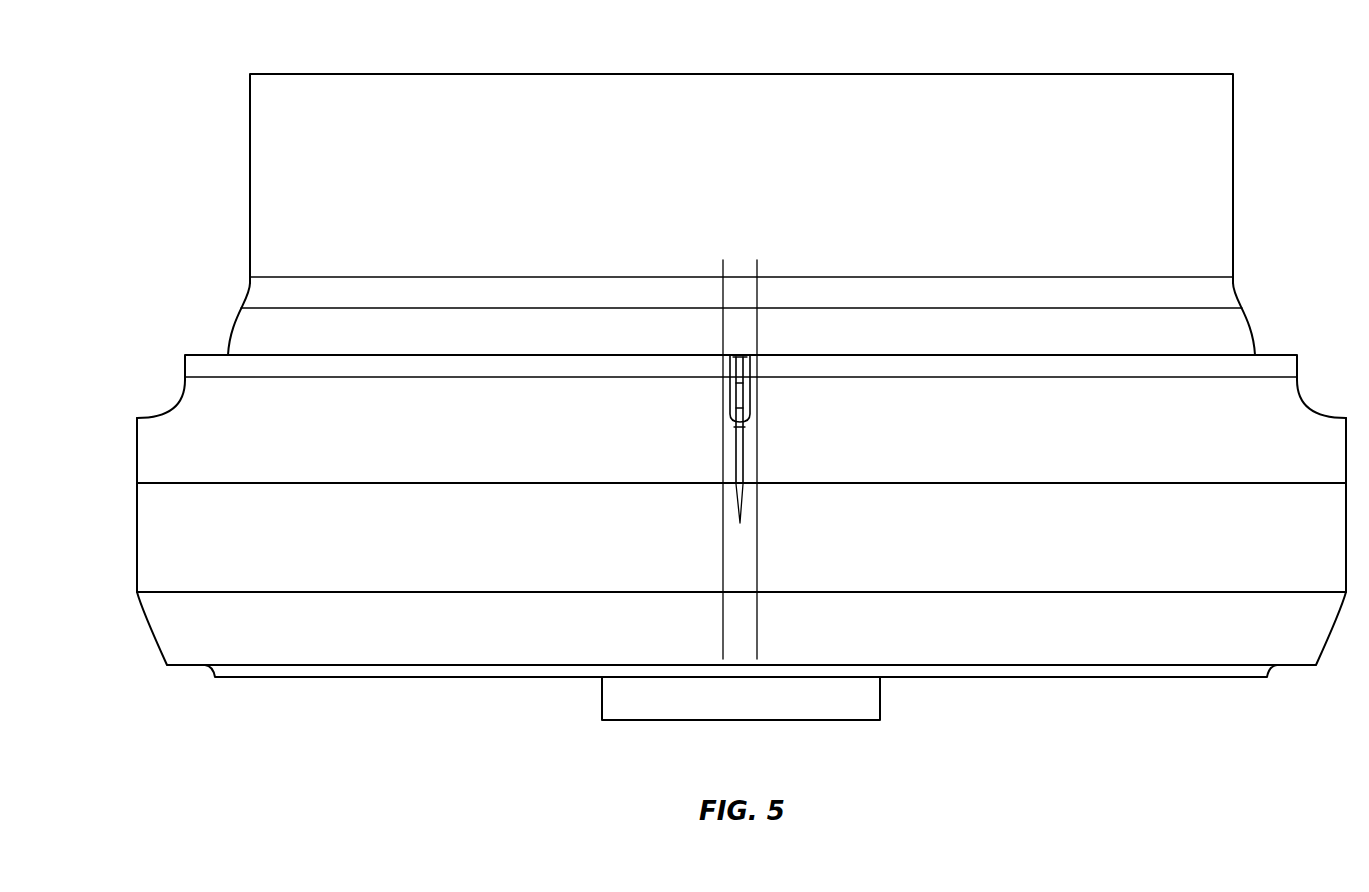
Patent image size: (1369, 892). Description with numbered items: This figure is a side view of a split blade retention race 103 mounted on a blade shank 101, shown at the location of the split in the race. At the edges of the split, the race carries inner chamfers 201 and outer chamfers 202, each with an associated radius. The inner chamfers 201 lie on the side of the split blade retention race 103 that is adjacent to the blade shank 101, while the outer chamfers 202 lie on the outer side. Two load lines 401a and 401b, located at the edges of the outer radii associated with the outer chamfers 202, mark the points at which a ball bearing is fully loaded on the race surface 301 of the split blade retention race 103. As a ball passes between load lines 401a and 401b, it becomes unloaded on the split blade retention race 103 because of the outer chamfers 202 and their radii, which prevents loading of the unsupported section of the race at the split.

The blade shank 101 is at (542, 243).
The race surface 301 is at (546, 409).
The split blade retention race 103 is at (185, 355).
The load line 401a is at (723, 268).
The load line 401b is at (757, 268).
The outer chamfer 202 is at (731, 362).
The inner chamfer 201 is at (740, 452).